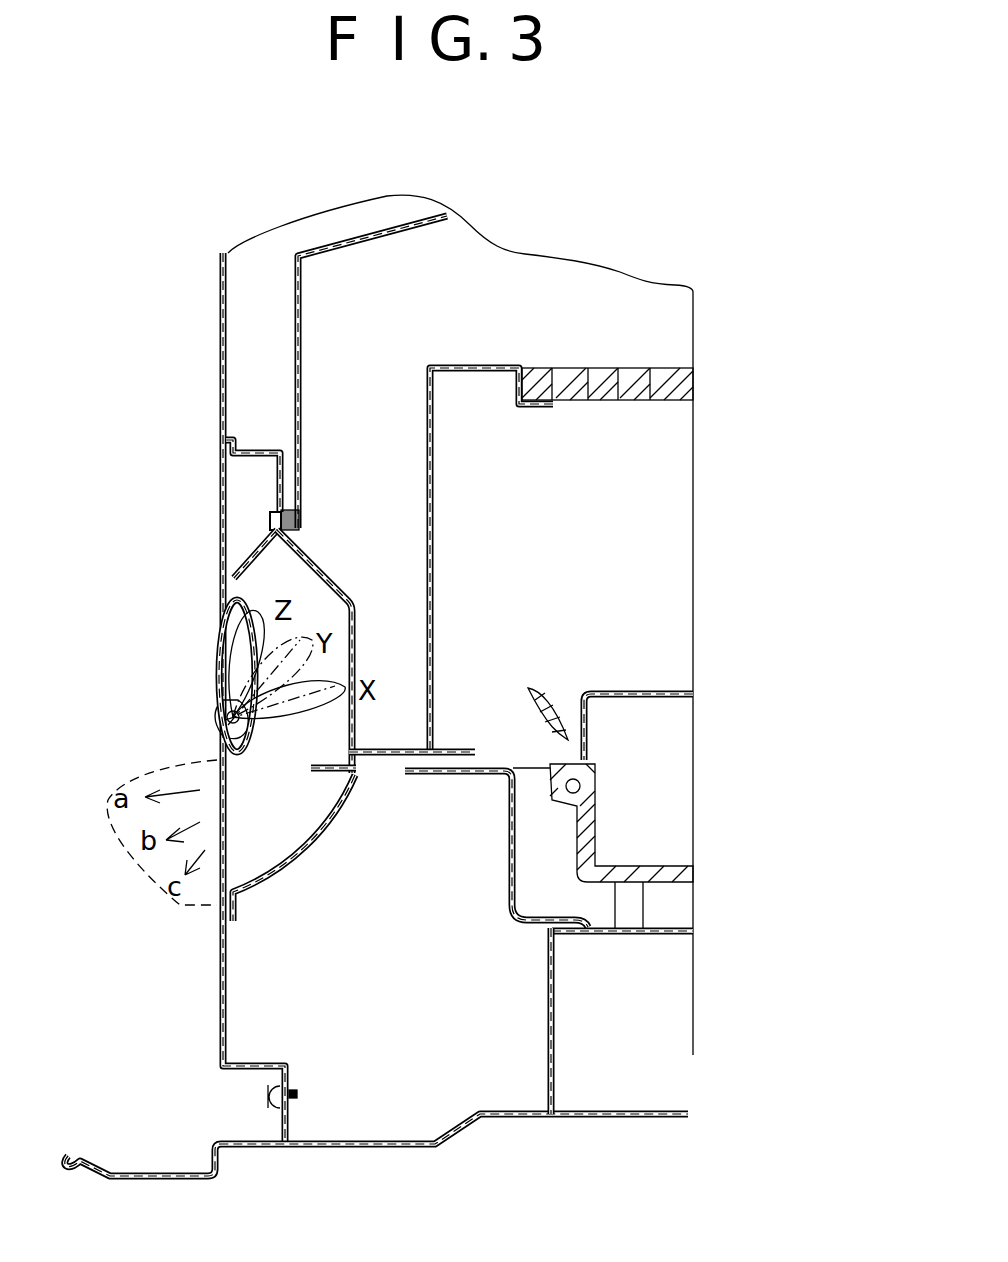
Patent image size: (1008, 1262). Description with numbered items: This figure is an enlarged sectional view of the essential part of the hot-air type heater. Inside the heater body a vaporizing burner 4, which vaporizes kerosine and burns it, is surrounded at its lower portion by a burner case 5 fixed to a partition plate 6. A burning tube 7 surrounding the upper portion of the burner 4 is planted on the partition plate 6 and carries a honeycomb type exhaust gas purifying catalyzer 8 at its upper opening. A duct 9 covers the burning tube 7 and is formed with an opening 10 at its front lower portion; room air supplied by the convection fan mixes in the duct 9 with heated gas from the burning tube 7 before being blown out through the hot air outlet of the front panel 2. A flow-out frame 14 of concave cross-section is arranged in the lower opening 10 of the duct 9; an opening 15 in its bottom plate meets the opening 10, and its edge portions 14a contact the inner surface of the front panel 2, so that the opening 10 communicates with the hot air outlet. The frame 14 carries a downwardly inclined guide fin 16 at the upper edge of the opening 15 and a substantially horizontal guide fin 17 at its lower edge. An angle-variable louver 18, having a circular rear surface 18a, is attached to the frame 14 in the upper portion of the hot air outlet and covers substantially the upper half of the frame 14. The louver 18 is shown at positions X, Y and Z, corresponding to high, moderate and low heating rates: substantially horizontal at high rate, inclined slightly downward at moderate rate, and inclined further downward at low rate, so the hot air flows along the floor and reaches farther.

The front panel 2 is at (220, 412).
The vaporizing burner 4 is at (577, 845).
The burner case 5 is at (510, 843).
The partition plate 6 is at (386, 758).
The burning tube 7 is at (428, 441).
The exhaust gas purifying catalyzer 8 is at (580, 368).
The duct 9 is at (294, 347).
The opening 10 is at (300, 522).
The flow-out frame 14 is at (292, 852).
The edge portions 14a is at (225, 437).
The opening 15 is at (354, 641).
The guide fin 16 is at (238, 572).
The guide fin 17 is at (318, 773).
The angle-variable louver 18 is at (222, 664).
The rear surface 18a is at (243, 612).